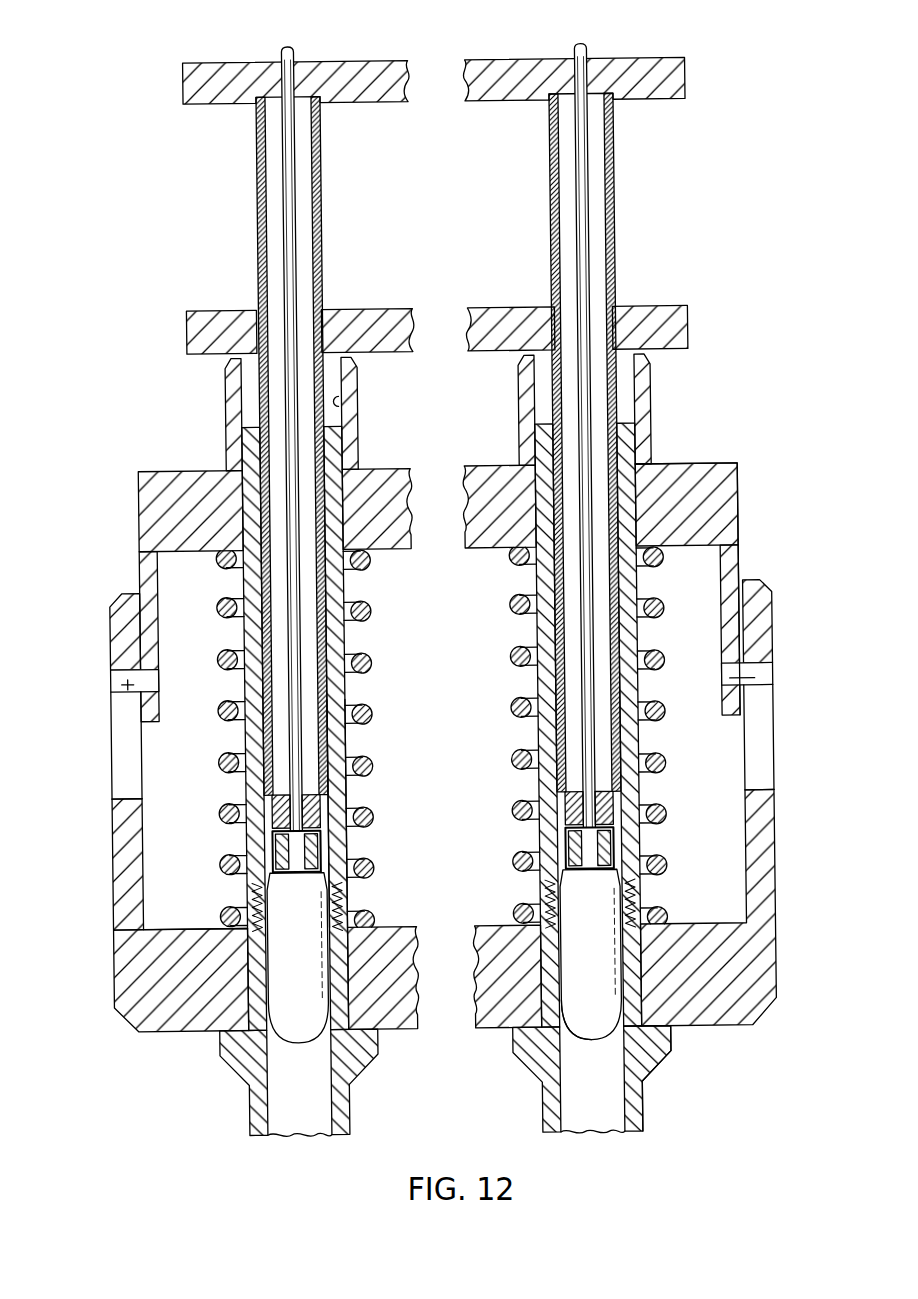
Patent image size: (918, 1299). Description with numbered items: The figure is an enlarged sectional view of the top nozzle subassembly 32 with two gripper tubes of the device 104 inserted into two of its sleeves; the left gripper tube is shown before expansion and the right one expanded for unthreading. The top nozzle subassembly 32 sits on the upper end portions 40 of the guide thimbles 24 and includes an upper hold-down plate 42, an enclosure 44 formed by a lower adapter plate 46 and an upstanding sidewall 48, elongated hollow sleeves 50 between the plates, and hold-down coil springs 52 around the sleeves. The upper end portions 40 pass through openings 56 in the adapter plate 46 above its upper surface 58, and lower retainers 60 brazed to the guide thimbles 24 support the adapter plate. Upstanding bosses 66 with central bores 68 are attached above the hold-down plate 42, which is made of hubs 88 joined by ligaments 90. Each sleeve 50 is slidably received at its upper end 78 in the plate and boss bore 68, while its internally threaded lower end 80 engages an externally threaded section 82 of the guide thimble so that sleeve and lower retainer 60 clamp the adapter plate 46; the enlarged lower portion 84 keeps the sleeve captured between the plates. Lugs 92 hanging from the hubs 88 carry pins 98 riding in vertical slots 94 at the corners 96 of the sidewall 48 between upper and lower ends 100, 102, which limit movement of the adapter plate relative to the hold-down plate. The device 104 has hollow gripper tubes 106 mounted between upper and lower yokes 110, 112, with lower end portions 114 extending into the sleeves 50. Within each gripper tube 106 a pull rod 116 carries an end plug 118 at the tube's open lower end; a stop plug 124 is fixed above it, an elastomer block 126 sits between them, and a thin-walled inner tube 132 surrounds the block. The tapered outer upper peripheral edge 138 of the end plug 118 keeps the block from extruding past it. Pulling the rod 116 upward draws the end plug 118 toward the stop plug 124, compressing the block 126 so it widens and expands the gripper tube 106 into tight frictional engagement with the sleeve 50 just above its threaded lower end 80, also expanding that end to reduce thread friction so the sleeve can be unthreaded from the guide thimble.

The guide thimbles 24 is at (352, 1110).
The top nozzle subassembly 32 is at (744, 448).
The upper end portions 40 is at (643, 1094).
The upper hold-down plate 42 is at (471, 518).
The enclosure 44 is at (110, 969).
The lower adapter plate 46 is at (498, 1021).
The upstanding sidewall 48 is at (122, 851).
The elongated tubular hollow sleeves 50 is at (650, 741).
The hold-down coil springs 52 is at (366, 660).
The openings 56 is at (562, 1023).
The upper surface 58 is at (180, 927).
The lower retainers 60 is at (670, 1042).
The upstanding bosses 66 is at (358, 379).
The central bores 68 is at (339, 403).
The upper ends 78 is at (336, 446).
The lower ends 80 is at (248, 898).
The externally threaded section 82 is at (341, 903).
The lower portion 84 is at (243, 791).
The hubs 88 is at (183, 549).
The ligaments 90 is at (695, 549).
The lugs 92 is at (150, 584).
The vertical slot 94 is at (122, 743).
The corners 96 is at (121, 814).
The pin 98 is at (791, 658).
The upper end 100 is at (125, 688).
The lower end 102 is at (128, 797).
The device 104 is at (506, 458).
The hollow gripper tubes 106 is at (321, 203).
The upper yoke 110 is at (489, 57).
The lower yoke 112 is at (488, 305).
The lower end portions 114 is at (341, 753).
The pull rods 116 is at (297, 245).
The end plugs 118 is at (306, 997).
The stop plugs 124 is at (322, 806).
The elastomer blocks 126 is at (273, 850).
The thin-walled hollow inner tubes 132 is at (320, 832).
The outer upper peripheral edge 138 is at (333, 871).